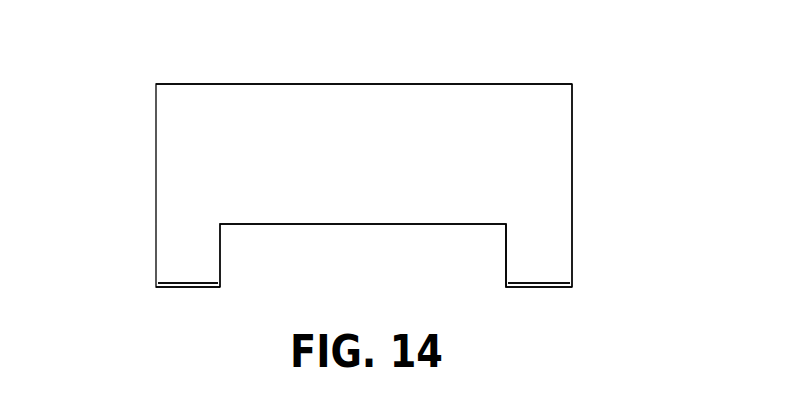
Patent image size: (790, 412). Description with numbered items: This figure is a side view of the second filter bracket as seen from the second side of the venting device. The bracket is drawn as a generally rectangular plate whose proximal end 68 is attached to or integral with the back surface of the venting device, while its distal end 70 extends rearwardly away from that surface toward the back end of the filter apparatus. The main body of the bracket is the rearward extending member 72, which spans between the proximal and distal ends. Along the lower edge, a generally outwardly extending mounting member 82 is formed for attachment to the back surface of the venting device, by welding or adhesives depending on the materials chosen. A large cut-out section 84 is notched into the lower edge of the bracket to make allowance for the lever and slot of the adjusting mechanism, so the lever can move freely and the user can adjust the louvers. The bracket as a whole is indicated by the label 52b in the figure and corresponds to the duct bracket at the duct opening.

The second duct bracket 52b is at (597, 93).
The distal end 70 is at (140, 86).
The proximal end 68 is at (140, 281).
The rearward extending member 72 is at (533, 160).
The mounting member 82 is at (532, 282).
The cut-out section 84 is at (318, 255).